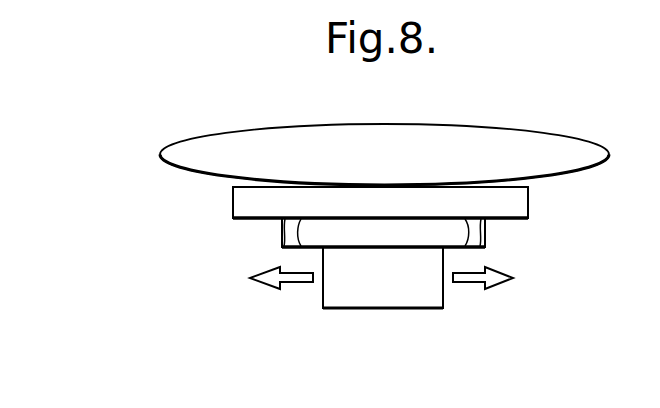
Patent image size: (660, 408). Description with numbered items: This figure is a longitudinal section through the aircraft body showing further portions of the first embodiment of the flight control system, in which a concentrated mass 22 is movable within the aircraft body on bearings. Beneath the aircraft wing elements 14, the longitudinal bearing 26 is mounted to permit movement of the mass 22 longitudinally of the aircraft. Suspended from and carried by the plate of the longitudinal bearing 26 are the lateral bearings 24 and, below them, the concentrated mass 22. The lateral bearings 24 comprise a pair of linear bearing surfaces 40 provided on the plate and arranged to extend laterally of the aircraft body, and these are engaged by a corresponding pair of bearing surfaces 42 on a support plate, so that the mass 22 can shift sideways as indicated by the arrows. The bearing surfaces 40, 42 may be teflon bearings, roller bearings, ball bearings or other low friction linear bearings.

The aircraft wing elements 14 is at (221, 152).
The longitudinal bearing 26 is at (243, 200).
The lateral bearings 24 is at (452, 234).
The linear bearing surfaces 40 is at (288, 230).
The bearing surfaces 42 is at (288, 230).
The concentrated mass 22 is at (411, 292).